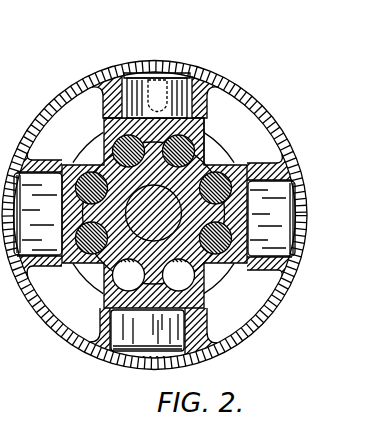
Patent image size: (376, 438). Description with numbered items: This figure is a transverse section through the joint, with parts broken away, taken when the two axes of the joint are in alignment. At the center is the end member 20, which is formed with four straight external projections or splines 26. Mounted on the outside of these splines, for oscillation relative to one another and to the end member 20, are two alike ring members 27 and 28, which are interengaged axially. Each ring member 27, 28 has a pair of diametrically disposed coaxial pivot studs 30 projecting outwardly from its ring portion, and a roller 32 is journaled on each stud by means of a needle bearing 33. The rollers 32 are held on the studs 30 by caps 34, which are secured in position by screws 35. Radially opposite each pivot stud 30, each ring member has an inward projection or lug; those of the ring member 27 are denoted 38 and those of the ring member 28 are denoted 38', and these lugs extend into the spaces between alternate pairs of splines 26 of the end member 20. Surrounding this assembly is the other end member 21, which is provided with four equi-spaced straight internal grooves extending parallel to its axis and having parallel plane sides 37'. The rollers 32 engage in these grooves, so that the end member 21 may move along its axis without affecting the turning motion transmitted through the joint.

The end member 20 is at (188, 215).
The end member 21 is at (250, 333).
The splines 26 is at (165, 213).
The ring member 27 is at (200, 128).
The ring member 28 is at (246, 176).
The pivot studs 30 is at (212, 77).
The roller 32 is at (297, 177).
The needle bearing 33 is at (139, 69).
The cap 34 is at (158, 74).
The screw 35 is at (138, 70).
The plane sides 37' is at (141, 359).
The inward projection 38 is at (165, 196).
The inward projection 38' is at (165, 215).